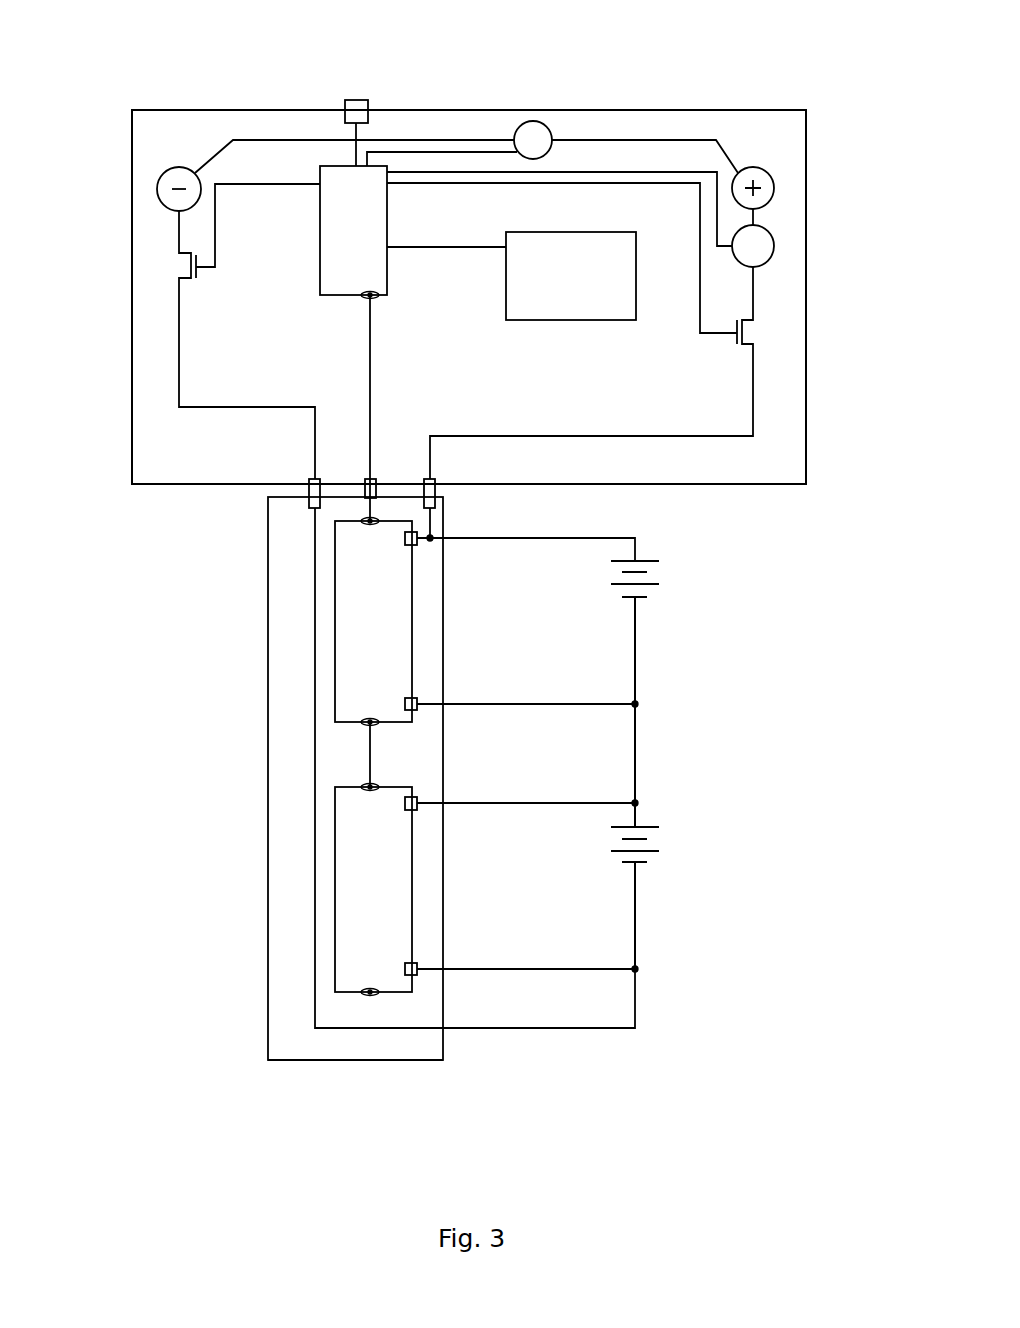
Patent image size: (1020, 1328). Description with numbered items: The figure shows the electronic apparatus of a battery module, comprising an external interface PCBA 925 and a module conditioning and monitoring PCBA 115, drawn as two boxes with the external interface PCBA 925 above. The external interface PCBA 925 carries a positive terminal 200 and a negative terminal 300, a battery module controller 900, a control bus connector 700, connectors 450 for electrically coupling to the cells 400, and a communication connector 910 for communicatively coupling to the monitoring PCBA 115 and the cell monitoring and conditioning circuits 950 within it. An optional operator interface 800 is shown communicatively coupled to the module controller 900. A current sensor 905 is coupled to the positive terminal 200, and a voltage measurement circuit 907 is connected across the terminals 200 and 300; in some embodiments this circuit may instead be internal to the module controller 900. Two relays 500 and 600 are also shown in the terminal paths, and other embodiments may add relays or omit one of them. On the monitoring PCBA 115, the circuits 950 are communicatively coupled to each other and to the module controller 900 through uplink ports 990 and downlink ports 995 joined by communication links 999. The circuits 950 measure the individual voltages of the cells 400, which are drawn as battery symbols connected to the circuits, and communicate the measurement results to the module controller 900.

The module conditioning and monitoring PCBA 115 is at (417, 1060).
The positive terminal 200 is at (755, 167).
The negative terminal 300 is at (170, 167).
The cells 400 is at (680, 591).
The connectors 450 is at (311, 480).
The relay 500 is at (753, 334).
The relay 600 is at (163, 269).
The control bus connector 700 is at (353, 100).
The operator interface 800 is at (593, 320).
The battery module controller 900 is at (345, 183).
The current sensor 905 is at (775, 242).
The voltage measurement circuit 907 is at (534, 121).
The communication connector 910 is at (370, 480).
The external interface PCBA 925 is at (687, 110).
The cell monitoring and conditioning circuits 950 is at (335, 942).
The uplink ports 990 is at (365, 523).
The downlink ports 995 is at (363, 297).
The communication links 999 is at (370, 352).